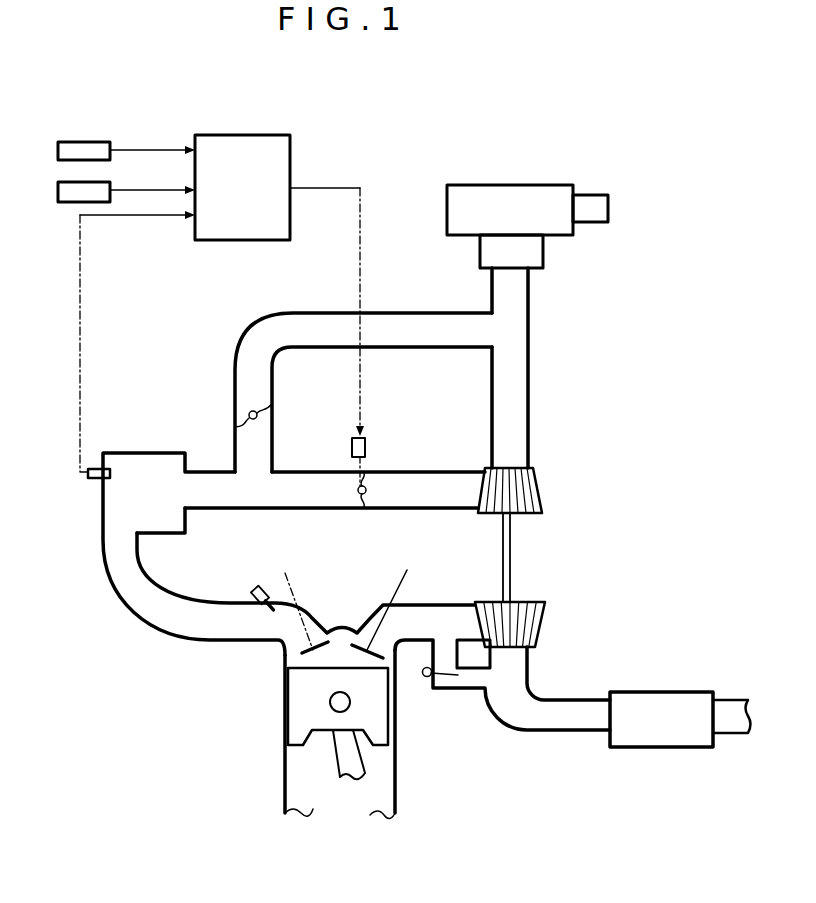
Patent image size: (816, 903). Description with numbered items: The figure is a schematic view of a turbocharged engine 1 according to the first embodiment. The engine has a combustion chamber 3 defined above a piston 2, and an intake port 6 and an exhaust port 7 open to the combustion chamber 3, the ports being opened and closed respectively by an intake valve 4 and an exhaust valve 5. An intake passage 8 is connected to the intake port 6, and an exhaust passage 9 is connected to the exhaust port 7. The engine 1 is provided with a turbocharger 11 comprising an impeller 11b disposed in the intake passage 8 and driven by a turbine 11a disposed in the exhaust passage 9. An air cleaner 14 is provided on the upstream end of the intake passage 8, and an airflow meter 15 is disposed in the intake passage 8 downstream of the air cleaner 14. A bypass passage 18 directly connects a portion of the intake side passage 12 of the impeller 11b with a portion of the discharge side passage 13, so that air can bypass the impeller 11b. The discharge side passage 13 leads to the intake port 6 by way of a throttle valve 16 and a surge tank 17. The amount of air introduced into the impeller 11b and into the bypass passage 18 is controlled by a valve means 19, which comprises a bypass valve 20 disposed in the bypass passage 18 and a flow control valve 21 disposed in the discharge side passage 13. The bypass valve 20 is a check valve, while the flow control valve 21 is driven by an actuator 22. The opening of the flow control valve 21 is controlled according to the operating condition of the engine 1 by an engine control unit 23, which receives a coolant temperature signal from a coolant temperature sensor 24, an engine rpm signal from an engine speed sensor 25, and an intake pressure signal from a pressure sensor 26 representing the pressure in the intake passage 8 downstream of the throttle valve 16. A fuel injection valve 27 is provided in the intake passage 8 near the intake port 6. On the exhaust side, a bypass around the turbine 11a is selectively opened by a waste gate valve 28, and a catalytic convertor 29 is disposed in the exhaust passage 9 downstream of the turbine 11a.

The turbocharged engine 1 is at (265, 776).
The piston 2 is at (305, 705).
The combustion chamber 3 is at (350, 660).
The intake valve 4 is at (297, 590).
The exhaust valve 5 is at (403, 588).
The intake port 6 is at (293, 636).
The exhaust port 7 is at (380, 612).
The intake passage 8 is at (153, 645).
The exhaust passage 9 is at (556, 746).
The turbocharger 11 is at (549, 569).
The turbine 11a is at (537, 632).
The impeller 11b is at (543, 505).
The intake side passage 12 is at (528, 425).
The discharge side passage 13 is at (440, 470).
The air cleaner 14 is at (513, 200).
The airflow meter 15 is at (537, 250).
The throttle valve 16 is at (217, 512).
The surge tank 17 is at (148, 452).
The bypass passage 18 is at (298, 308).
The valve means 19 is at (310, 423).
The bypass valve 20 is at (249, 412).
The flow control valve 21 is at (368, 510).
The actuator 22 is at (365, 447).
The engine control unit 23 is at (273, 135).
The coolant temperature sensor 24 is at (100, 182).
The engine speed sensor 25 is at (95, 142).
The pressure sensor 26 is at (94, 480).
The fuel injection valve 27 is at (248, 592).
The waste gate valve 28 is at (458, 677).
The catalytic convertor 29 is at (668, 705).